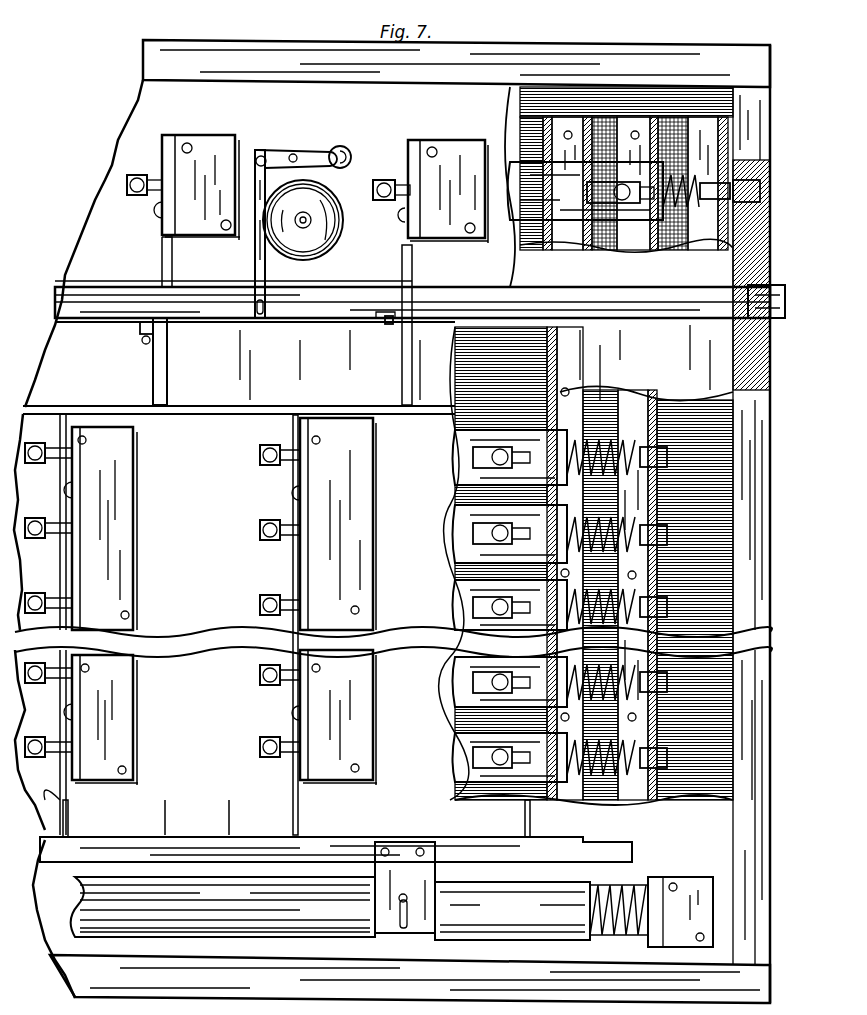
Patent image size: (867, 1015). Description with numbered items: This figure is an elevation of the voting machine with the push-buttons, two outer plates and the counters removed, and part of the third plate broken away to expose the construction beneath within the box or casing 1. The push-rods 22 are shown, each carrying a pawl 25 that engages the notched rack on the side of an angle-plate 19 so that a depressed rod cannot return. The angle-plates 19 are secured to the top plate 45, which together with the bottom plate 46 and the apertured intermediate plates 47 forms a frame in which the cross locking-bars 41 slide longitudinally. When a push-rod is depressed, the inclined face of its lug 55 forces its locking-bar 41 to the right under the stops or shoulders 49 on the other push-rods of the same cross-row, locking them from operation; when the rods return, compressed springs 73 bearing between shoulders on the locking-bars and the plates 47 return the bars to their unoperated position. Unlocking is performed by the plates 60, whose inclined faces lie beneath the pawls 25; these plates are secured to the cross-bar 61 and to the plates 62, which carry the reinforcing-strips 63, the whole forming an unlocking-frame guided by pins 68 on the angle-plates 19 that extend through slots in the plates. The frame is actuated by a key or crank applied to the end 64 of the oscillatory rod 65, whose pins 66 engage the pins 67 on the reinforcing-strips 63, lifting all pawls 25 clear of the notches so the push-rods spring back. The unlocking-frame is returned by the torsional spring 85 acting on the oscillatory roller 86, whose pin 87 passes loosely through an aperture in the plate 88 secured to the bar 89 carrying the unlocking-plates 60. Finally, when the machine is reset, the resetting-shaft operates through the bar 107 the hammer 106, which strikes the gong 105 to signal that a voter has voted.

The box or casing 1 is at (655, 42).
The angle-plate 19 is at (72, 495).
The push-rod 22 is at (373, 186).
The pawl 25 is at (390, 182).
The cross locking-bar 41 is at (558, 472).
The top plate 45 is at (378, 368).
The bottom plate 46 is at (695, 600).
The intermediate plate 47 is at (636, 127).
The stop or shoulder 49 is at (473, 543).
The inclined lug 55 is at (525, 543).
The unlocking-plate 60 is at (293, 430).
The cross-bar 61 is at (203, 415).
The plate 62 is at (167, 360).
The reinforcing-strip 63 is at (153, 358).
The end of rod 64 is at (785, 300).
The rod or roller 65 is at (690, 290).
The pin 66 is at (386, 326).
The pin 67 is at (376, 318).
The pin 68 is at (398, 215).
The compressed spring 73 is at (698, 208).
The torsional spring 85 is at (625, 942).
The oscillatory roller 86 is at (512, 911).
The pin 87 is at (400, 900).
The plate 88 is at (405, 887).
The bar 89 is at (336, 849).
The gong 105 is at (303, 220).
The hammer 106 is at (348, 152).
The bar 107 is at (256, 268).